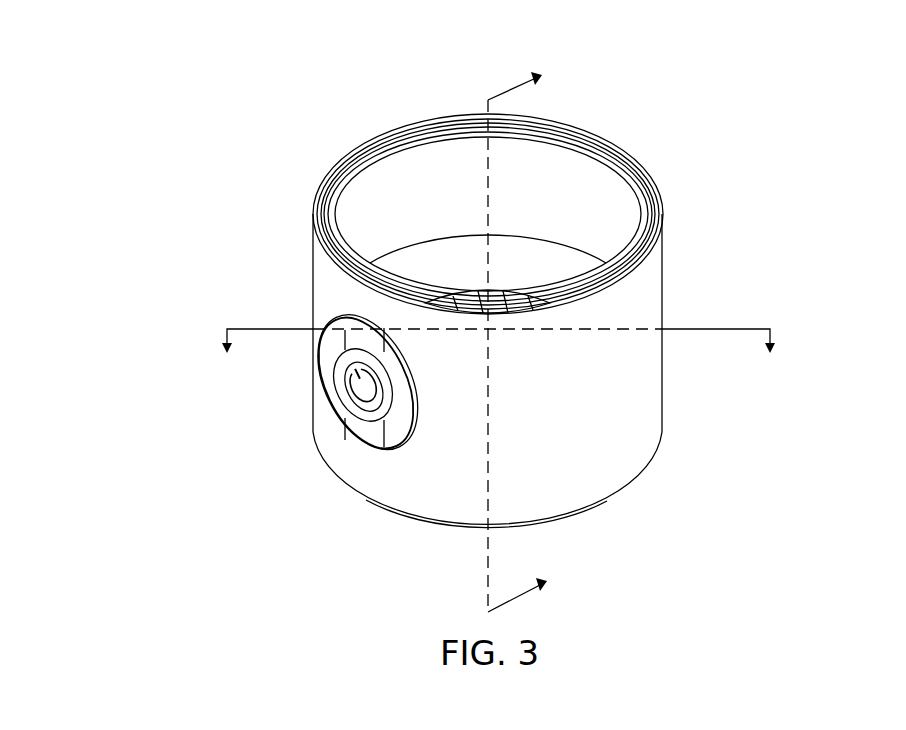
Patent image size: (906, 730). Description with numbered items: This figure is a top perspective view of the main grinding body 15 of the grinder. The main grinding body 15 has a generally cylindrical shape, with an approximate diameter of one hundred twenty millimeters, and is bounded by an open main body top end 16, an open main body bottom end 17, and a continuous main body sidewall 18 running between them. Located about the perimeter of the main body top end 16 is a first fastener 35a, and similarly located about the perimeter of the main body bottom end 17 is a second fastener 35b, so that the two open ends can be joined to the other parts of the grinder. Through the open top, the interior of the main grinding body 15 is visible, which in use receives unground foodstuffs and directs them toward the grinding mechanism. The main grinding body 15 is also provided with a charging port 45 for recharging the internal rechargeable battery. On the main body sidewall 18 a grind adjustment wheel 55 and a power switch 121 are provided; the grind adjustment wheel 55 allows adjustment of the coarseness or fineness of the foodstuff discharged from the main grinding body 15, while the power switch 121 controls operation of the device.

The main grinding body 15 is at (116, 177).
The main body top end 16 is at (425, 123).
The main body bottom end 17 is at (568, 522).
The main body sidewall 18 is at (335, 298).
The first fastener 35a is at (660, 222).
The second fastener 35b is at (612, 502).
The charging port 45 is at (655, 408).
The grind adjustment wheel 55 is at (360, 430).
The power switch 121 is at (360, 388).